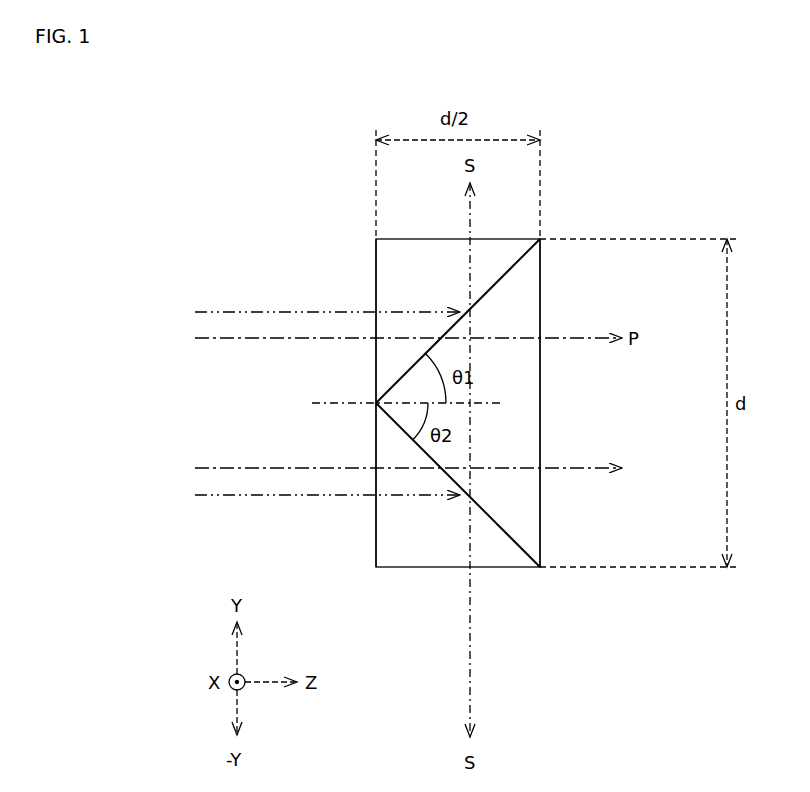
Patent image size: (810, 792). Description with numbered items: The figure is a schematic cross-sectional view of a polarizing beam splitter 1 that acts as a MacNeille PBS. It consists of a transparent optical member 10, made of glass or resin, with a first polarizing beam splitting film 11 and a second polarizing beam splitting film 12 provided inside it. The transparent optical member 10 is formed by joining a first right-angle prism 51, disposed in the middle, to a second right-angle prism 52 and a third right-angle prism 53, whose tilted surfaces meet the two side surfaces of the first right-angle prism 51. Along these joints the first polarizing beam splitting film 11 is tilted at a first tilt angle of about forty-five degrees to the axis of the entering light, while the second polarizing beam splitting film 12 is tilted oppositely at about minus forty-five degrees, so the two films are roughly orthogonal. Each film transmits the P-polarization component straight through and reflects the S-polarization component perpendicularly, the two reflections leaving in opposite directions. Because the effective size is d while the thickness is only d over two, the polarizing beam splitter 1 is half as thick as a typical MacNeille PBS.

The polarizing beam splitter 1 is at (290, 228).
The transparent optical member 10 is at (402, 569).
The first polarizing beam splitting film 11 is at (538, 277).
The second polarizing beam splitting film 12 is at (515, 523).
The first right-angle prism 51 is at (530, 433).
The second right-angle prism 52 is at (382, 273).
The third right-angle prism 53 is at (382, 533).